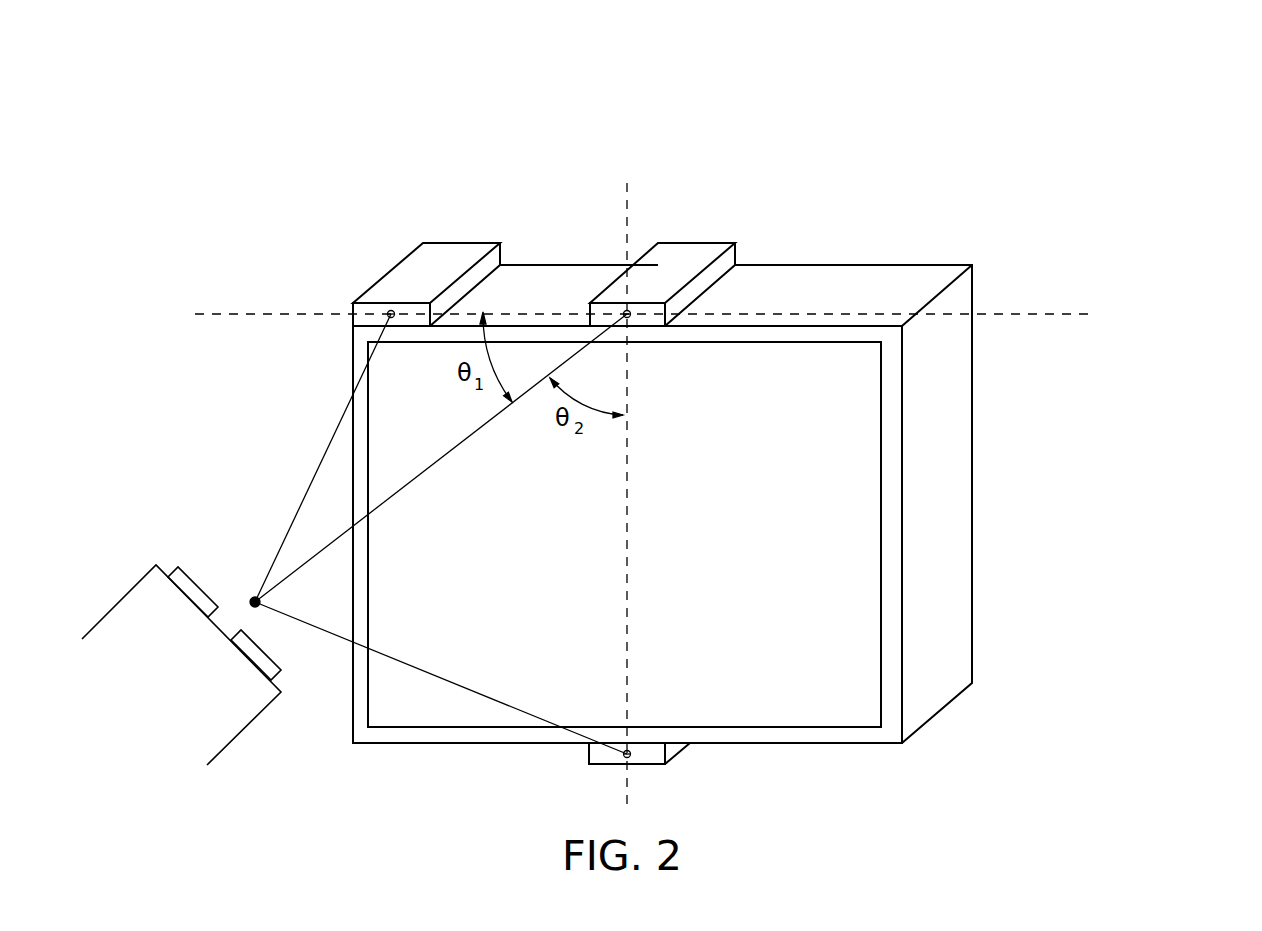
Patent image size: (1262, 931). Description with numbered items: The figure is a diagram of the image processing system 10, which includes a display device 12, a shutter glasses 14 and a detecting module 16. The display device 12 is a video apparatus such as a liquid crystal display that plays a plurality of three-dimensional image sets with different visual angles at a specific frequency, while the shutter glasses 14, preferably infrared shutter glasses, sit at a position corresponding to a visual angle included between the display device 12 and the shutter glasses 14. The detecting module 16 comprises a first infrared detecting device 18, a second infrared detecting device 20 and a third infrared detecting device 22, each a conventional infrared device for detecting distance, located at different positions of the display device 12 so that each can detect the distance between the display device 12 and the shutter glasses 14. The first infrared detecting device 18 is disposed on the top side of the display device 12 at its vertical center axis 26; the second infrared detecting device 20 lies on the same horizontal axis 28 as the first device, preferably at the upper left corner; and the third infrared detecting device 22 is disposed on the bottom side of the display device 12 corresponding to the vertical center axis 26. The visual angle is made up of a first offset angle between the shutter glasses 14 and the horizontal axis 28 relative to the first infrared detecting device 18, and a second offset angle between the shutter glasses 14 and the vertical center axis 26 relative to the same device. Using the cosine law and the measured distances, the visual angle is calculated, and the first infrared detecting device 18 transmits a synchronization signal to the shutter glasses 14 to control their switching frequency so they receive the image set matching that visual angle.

The image processing system 10 is at (1137, 126).
The display device 12 is at (952, 510).
The shutter glasses 14 is at (276, 746).
The detecting module 16 is at (857, 130).
The first infrared detecting device 18 is at (698, 250).
The second infrared detecting device 20 is at (452, 250).
The third infrared detecting device 22 is at (646, 754).
The vertical center axis 26 is at (627, 787).
The horizontal axis 28 is at (1057, 313).